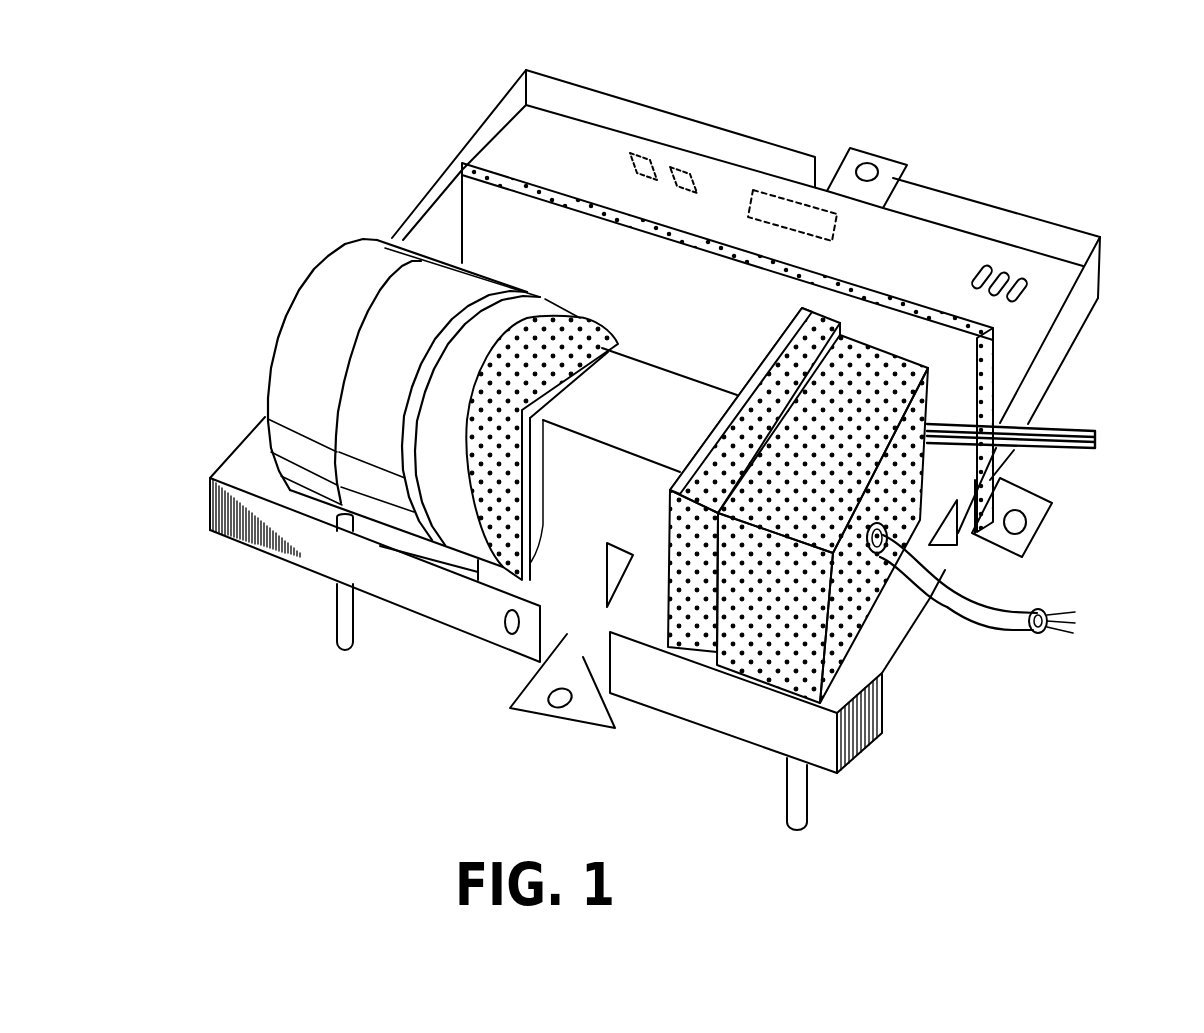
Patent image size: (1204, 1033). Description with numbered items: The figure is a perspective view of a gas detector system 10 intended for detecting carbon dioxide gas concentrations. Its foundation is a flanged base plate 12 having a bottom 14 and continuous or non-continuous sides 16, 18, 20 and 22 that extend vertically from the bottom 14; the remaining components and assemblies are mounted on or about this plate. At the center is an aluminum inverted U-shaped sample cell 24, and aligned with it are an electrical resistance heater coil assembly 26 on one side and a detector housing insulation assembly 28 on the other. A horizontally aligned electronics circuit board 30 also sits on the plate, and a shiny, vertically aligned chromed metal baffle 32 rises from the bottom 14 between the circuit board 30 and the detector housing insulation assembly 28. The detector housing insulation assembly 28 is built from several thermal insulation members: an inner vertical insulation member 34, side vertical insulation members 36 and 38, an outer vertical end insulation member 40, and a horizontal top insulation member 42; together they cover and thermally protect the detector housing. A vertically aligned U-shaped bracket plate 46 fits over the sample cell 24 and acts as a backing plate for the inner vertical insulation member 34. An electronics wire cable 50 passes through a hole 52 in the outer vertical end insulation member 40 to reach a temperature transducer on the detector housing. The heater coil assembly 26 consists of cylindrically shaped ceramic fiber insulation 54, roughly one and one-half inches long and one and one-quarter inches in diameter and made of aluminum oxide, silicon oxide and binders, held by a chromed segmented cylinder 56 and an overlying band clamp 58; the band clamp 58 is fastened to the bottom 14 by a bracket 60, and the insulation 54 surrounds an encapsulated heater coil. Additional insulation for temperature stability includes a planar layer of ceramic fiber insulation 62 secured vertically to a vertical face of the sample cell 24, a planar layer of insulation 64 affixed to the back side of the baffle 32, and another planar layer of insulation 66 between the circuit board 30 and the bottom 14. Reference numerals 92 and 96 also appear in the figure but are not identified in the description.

The gas detector system 10 is at (1036, 149).
The flanged base plate 12 is at (668, 450).
The bottom 14 is at (789, 466).
The side 16 is at (546, 625).
The side 18 is at (335, 313).
The side 20 is at (837, 184).
The side 22 is at (1030, 480).
The sample cell 24 is at (672, 356).
The electrical resistance heater coil assembly 26 is at (403, 444).
The detector housing insulation assembly 28 is at (827, 533).
The electronics circuit board 30 is at (1046, 285).
The chromed metal baffle 32 is at (663, 347).
The inner vertical insulation member 34 is at (754, 470).
The side vertical insulation member 36 is at (764, 662).
The side vertical insulation member 38 is at (954, 479).
The outer vertical end insulation member 40 is at (903, 535).
The horizontal top insulation member 42 is at (839, 438).
The U-shaped bracket plate 46 is at (741, 401).
The electronics wire cable 50 is at (1048, 641).
The hole 52 is at (952, 589).
The ceramic fiber insulation 54 is at (571, 416).
The chromed segmented cylinder 56 is at (416, 397).
The band clamp 58 is at (367, 363).
The bracket 60 is at (421, 603).
The planar layer of ceramic fiber insulation 62 is at (566, 466).
The planar layer of insulation 64 is at (428, 150).
The planar layer of insulation 66 is at (1013, 452).
The shaft housing 92 is at (570, 388).
The bracket foot 96 is at (568, 578).